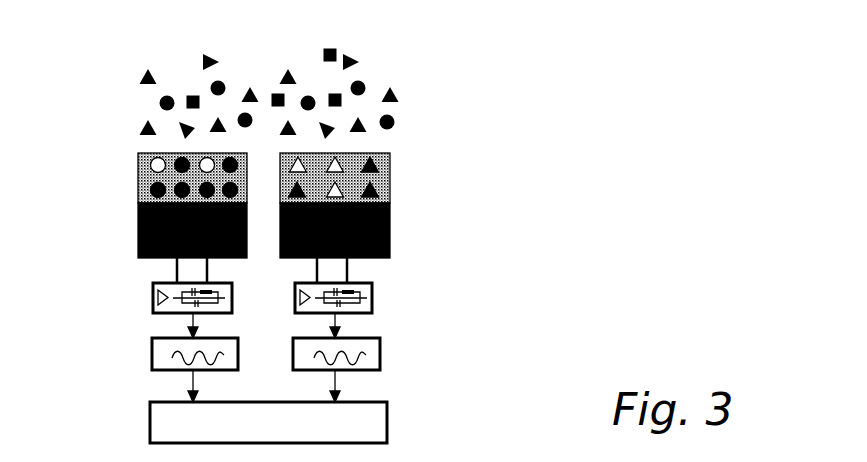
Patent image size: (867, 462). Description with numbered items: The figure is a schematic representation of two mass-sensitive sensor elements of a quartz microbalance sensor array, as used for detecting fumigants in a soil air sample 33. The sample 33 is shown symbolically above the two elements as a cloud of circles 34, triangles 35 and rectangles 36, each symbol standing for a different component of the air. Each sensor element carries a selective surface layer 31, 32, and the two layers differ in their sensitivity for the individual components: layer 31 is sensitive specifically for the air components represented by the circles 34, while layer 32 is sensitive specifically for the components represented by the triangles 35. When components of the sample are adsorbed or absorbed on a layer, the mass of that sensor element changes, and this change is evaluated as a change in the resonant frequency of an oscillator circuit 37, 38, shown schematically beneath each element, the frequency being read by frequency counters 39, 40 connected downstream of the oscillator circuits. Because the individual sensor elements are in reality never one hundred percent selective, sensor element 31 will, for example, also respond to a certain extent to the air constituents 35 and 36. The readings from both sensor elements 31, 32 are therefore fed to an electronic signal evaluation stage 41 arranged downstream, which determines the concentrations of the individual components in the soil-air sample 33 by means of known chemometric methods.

The selective surface layer 31 is at (140, 178).
The selective surface layer 32 is at (390, 178).
The soil air sample 33 is at (477, 77).
The circles 34 is at (395, 122).
The triangles 35 is at (140, 80).
The rectangles 36 is at (336, 51).
The oscillator circuit 37 is at (153, 293).
The oscillator circuit 38 is at (375, 293).
The frequency counter 39 is at (150, 350).
The frequency counter 40 is at (382, 350).
The electronic signal evaluation stage 41 is at (367, 422).